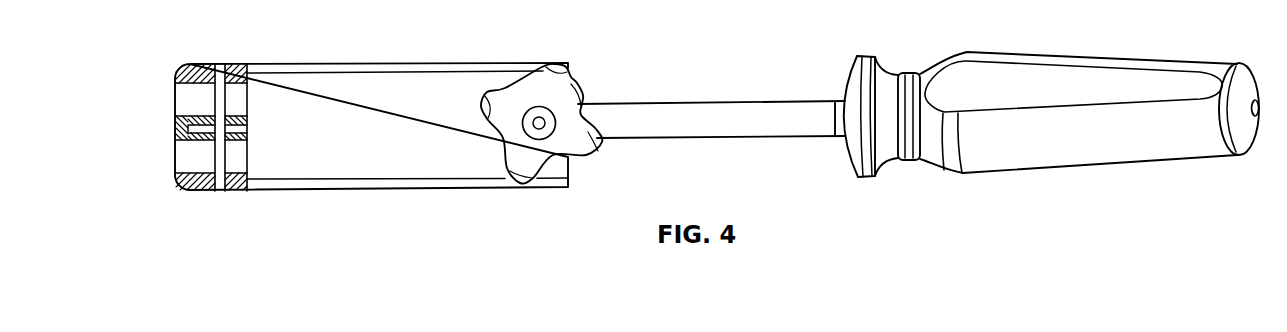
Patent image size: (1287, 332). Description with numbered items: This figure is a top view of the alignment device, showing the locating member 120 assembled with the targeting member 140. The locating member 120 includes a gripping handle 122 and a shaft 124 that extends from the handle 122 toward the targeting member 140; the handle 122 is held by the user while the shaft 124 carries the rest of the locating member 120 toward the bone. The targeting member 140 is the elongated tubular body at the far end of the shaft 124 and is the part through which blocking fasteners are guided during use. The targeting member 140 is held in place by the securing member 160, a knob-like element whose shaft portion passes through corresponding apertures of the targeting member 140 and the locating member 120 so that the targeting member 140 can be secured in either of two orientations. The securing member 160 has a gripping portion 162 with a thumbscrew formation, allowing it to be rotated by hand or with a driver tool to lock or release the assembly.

The locating member 120 is at (766, 36).
The gripping handle 122 is at (1042, 160).
The shaft 124 is at (707, 139).
The targeting member 140 is at (374, 175).
The securing member 160 is at (582, 141).
The gripping portion 162 is at (566, 91).